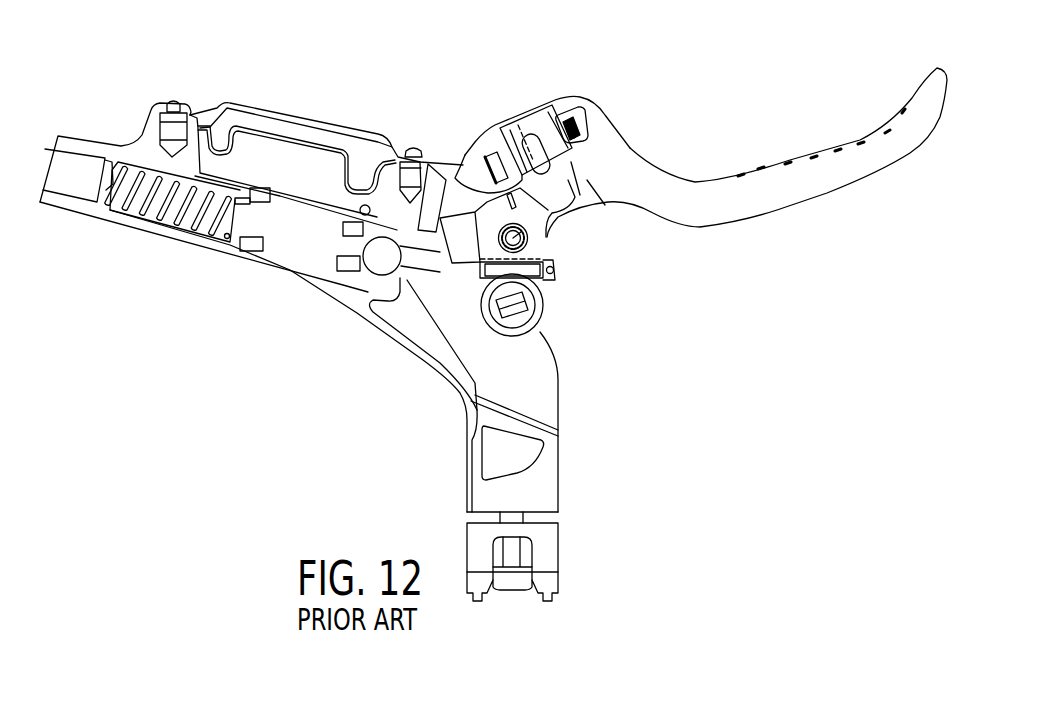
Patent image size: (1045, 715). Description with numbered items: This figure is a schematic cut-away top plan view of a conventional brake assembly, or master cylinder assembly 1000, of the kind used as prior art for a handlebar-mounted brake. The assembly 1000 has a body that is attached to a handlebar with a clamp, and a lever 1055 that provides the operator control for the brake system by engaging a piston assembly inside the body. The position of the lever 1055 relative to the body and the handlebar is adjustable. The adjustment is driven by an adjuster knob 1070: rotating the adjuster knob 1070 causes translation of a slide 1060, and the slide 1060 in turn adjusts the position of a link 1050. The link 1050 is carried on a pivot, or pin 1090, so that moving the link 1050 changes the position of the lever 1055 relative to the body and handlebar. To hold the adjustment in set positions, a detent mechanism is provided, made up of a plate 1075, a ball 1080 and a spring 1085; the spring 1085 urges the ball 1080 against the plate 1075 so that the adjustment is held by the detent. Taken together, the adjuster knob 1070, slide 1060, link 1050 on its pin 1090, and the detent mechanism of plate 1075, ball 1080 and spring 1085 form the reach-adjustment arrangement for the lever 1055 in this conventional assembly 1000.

The brake assembly/master cylinder assembly 1000 is at (373, 67).
The link 1050 is at (540, 250).
The lever 1055 is at (833, 177).
The slide 1060 is at (525, 128).
The adjuster knob 1070 is at (492, 156).
The plate 1075 is at (483, 188).
The ball 1080 is at (580, 132).
The spring 1085 is at (580, 113).
The pivot/pin 1090 is at (530, 232).